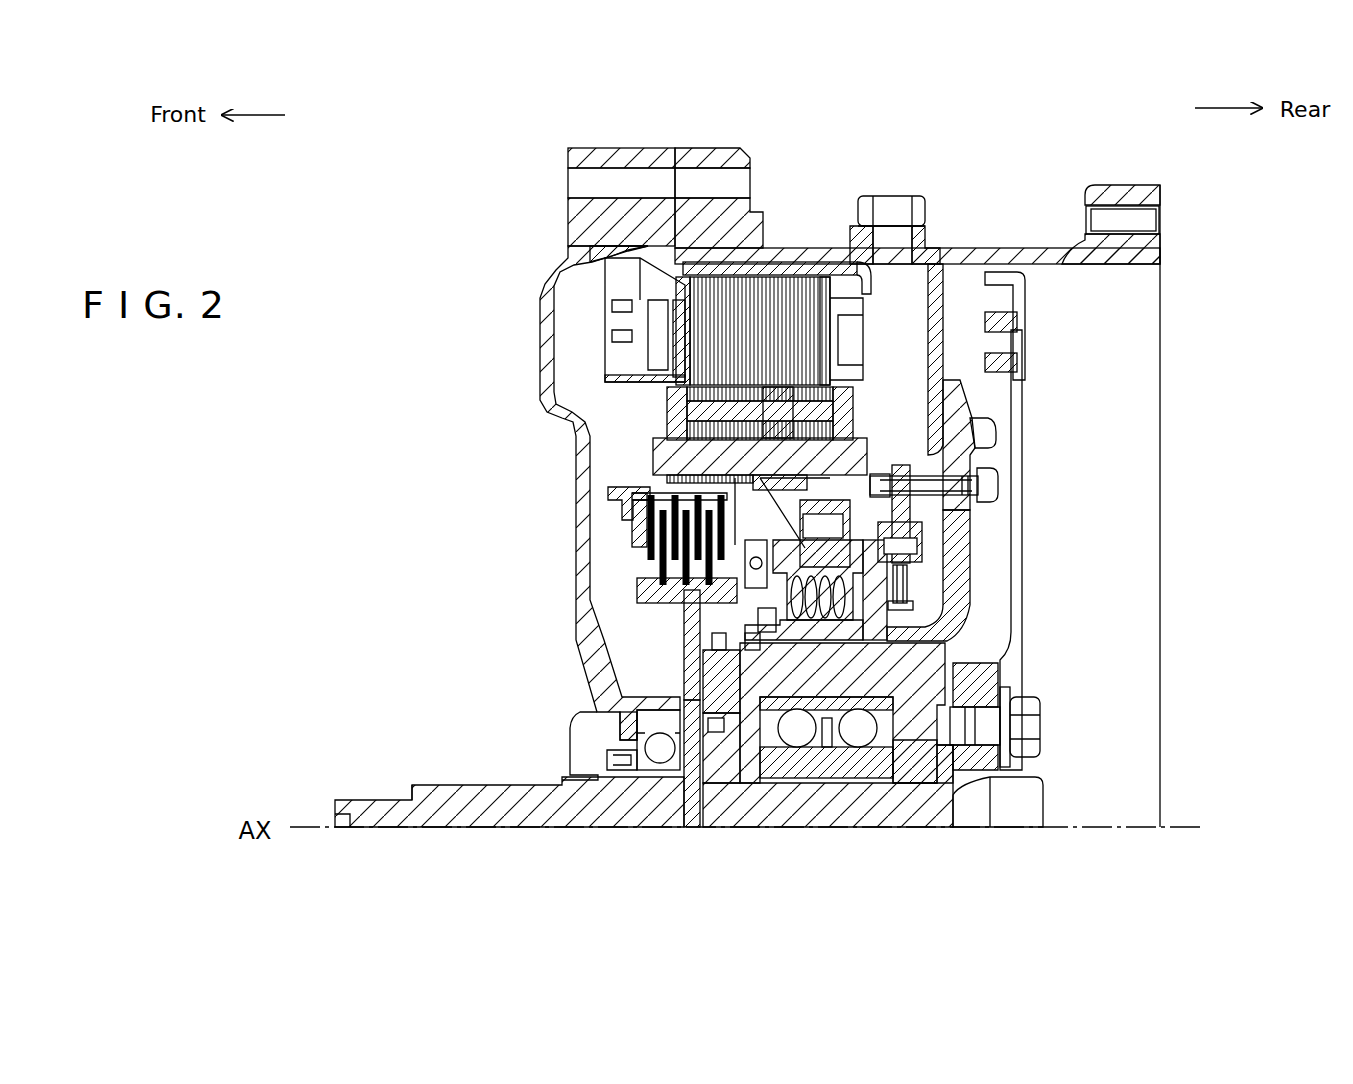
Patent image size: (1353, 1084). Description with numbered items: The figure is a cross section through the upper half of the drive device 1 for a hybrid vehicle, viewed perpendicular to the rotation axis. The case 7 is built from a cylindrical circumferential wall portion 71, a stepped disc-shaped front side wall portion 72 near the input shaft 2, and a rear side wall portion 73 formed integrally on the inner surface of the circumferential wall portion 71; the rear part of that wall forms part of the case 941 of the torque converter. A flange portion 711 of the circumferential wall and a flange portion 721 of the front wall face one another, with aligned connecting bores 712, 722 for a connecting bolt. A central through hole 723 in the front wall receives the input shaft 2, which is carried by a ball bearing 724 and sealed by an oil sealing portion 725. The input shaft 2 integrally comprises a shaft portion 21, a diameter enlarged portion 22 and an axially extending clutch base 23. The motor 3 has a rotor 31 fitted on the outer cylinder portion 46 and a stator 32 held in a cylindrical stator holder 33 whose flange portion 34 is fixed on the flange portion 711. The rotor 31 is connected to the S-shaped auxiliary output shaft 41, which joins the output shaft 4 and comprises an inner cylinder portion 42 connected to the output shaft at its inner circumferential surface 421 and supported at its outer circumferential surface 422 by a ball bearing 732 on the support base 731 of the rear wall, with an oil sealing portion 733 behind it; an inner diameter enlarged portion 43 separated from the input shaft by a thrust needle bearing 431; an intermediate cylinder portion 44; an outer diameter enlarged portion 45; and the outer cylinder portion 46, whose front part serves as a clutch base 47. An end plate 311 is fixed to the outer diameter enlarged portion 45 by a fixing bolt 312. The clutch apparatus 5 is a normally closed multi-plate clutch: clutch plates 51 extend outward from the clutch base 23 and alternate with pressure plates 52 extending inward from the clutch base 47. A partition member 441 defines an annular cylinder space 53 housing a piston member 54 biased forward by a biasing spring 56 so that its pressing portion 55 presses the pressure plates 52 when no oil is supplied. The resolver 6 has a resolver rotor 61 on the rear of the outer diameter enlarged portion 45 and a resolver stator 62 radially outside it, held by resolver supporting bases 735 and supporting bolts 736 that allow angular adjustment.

The drive device 1 is at (462, 120).
The input shaft 2 is at (440, 858).
The shaft portion 21 is at (532, 820).
The diameter enlarged portion 22 is at (730, 658).
The clutch base 23 is at (690, 610).
The motor 3 is at (1110, 283).
The rotor 31 is at (830, 420).
The end plate 311 is at (975, 472).
The fixing bolt 312 is at (985, 445).
The stator 32 is at (803, 338).
The stator holder 33 is at (870, 287).
The flange portion 34 is at (612, 243).
The output shaft 4 is at (933, 810).
The auxiliary output shaft 41 is at (855, 642).
The inner cylinder portion 42 is at (783, 766).
The inner circumferential surface 421 is at (790, 785).
The outer circumferential surface 422 is at (858, 742).
The inner diameter enlarged portion 43 is at (733, 730).
The thrust needle bearing 431 is at (685, 785).
The intermediate cylinder portion 44 is at (908, 630).
The partition member 441 is at (762, 622).
The outer diameter enlarged portion 45 is at (985, 598).
The outer cylinder portion 46 is at (935, 414).
The clutch base 47 is at (640, 495).
The clutch apparatus 5 is at (625, 548).
The clutch plates 51 is at (660, 568).
The pressure plates 52 is at (645, 523).
The cylinder space 53 is at (660, 590).
The piston member 54 is at (690, 425).
The pressing portion 55 is at (700, 452).
The biasing spring 56 is at (745, 580).
The resolver 6 is at (1090, 510).
The resolver rotor 61 is at (925, 560).
The resolver stator 62 is at (930, 535).
The case 7 is at (800, 190).
The circumferential wall portion 71 is at (818, 245).
The flange portion 711 is at (716, 155).
The connecting bore 712 is at (733, 175).
The front side wall portion 72 is at (540, 302).
The flange portion 721 is at (645, 155).
The connecting bore 722 is at (607, 185).
The through hole 723 is at (645, 760).
The ball bearing 724 is at (612, 718).
The oil sealing portion 725 is at (620, 762).
The rear side wall portion 73 is at (940, 405).
The support base 731 is at (998, 680).
The ball bearing 732 is at (887, 780).
The oil sealing portion 733 is at (950, 800).
The resolver supporting bases 735 is at (1000, 508).
The supporting bolt 736 is at (1000, 488).
The case 941 is at (1050, 250).